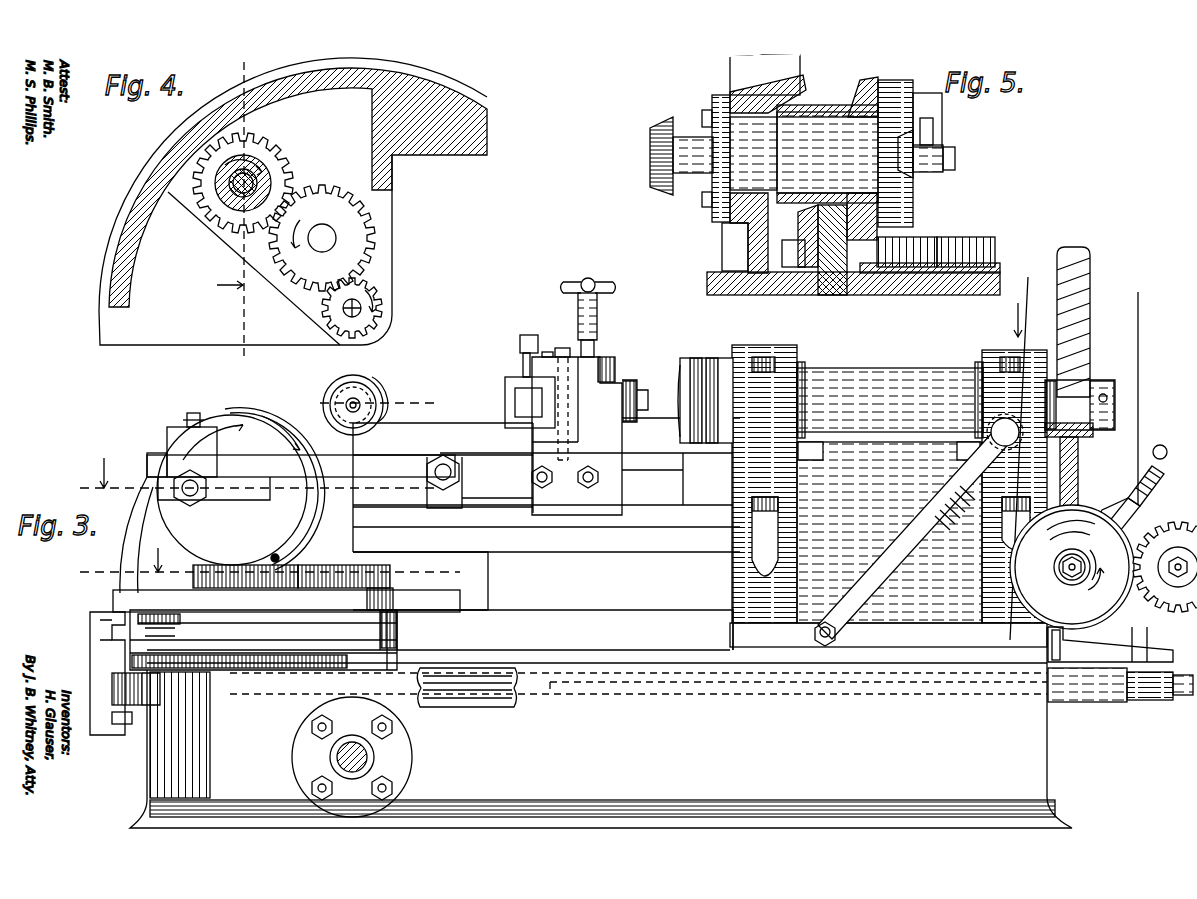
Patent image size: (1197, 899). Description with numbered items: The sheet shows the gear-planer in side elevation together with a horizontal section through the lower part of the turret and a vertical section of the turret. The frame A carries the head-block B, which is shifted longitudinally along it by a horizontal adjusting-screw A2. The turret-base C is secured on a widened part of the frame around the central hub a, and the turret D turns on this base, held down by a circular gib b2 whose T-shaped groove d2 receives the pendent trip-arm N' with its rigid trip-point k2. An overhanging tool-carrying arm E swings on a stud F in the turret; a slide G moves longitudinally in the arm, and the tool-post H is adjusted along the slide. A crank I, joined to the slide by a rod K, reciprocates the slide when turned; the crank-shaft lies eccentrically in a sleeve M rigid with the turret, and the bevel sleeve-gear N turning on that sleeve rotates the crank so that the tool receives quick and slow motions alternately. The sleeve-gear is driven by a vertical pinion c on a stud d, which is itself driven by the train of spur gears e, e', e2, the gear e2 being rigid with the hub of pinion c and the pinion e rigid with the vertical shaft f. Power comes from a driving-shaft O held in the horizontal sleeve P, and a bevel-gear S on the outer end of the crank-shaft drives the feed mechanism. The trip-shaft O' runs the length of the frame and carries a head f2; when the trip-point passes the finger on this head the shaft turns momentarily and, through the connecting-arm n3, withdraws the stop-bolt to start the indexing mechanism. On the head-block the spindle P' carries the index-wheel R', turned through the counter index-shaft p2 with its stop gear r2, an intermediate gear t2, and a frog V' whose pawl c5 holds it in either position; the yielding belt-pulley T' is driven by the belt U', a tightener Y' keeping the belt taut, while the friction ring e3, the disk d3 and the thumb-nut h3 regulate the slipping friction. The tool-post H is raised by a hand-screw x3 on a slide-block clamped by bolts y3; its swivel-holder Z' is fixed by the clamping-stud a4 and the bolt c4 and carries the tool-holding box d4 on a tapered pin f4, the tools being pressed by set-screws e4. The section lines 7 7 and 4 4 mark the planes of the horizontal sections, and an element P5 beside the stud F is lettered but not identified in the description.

In FIG. 3, the frame A is at (601, 727).
In FIG. 3, the horizontal adjusting-screw A2 is at (1155, 690).
In FIG. 3, the head-block B is at (888, 496).
In FIG. 3, the turret-base C is at (297, 640).
In FIG. 3, the tool-carrying arm E is at (625, 540).
In FIG. 3, the slide G is at (660, 462).
In FIG. 3, the tool-post H is at (570, 413).
In FIG. 3, the swivel-holder Z' is at (618, 422).
In FIG. 5, the crank I is at (897, 92).
In FIG. 3, the crank I is at (232, 490).
In FIG. 4, the turret D is at (293, 209).
In FIG. 5, the turret D is at (728, 245).
In FIG. 3, the turret D is at (228, 500).
In FIG. 5, the bevel sleeve-gear N is at (827, 135).
In FIG. 3, the bevel sleeve-gear N is at (241, 420).
In FIG. 3, the horizontal stud F is at (357, 403).
In FIG. 3, the pulley pin P5 is at (357, 410).
In FIG. 5, the rod K is at (935, 130).
In FIG. 3, the rod K is at (443, 464).
In FIG. 4, the vertical pinion c is at (230, 196).
In FIG. 5, the vertical pinion c is at (803, 218).
In FIG. 3, the vertical pinion c is at (280, 557).
In FIG. 4, the stud d is at (208, 183).
In FIG. 4, the spur-pinion e is at (354, 303).
In FIG. 5, the spur-pinion e is at (968, 236).
In FIG. 3, the spur-pinion e is at (388, 582).
In FIG. 4, the spur driving-gear e' is at (322, 238).
In FIG. 5, the spur driving-gear e' is at (930, 239).
In FIG. 3, the spur driving-gear e' is at (344, 588).
In FIG. 4, the spur driving-gear e2 is at (265, 153).
In FIG. 5, the spur driving-gear e2 is at (787, 270).
In FIG. 3, the spur driving-gear e2 is at (208, 590).
In FIG. 3, the friction ring e3 is at (1085, 516).
In FIG. 3, the set-screws e4 is at (520, 342).
In FIG. 4, the vertical shaft f is at (343, 308).
In FIG. 3, the head f2 is at (112, 683).
In FIG. 3, the tapered pin f4 is at (546, 352).
In FIG. 3, the bolt c4 is at (563, 348).
In FIG. 3, the spring-actuated pawl c5 is at (1160, 445).
In FIG. 3, the T-shaped groove d2 is at (125, 622).
In FIG. 3, the opposing disk d3 is at (1084, 563).
In FIG. 3, the tool-holding box d4 is at (507, 390).
In FIG. 3, the circular gib b2 is at (165, 634).
In FIG. 3, the trip-point k2 is at (125, 725).
In FIG. 3, the trip-arm N' is at (118, 705).
In FIG. 3, the horizontal sleeve P is at (339, 757).
In FIG. 3, the driving-shaft O is at (368, 757).
In FIG. 3, the trip-shaft O' is at (467, 700).
In FIG. 3, the horizontal spindle P' is at (830, 400).
In FIG. 3, the tightener Y' is at (919, 530).
In FIG. 3, the index-wheel R' is at (1083, 377).
In FIG. 3, the driving-belt U' is at (1096, 458).
In FIG. 3, the frog V' is at (1143, 507).
In FIG. 3, the belt-pulley T' is at (1072, 567).
In FIG. 3, the intermediate gear t2 is at (1066, 576).
In FIG. 3, the thumb-nut h3 is at (1073, 580).
In FIG. 3, the counter index-shaft p2 is at (1178, 563).
In FIG. 3, the gear r2 is at (1178, 584).
In FIG. 3, the connecting-arm n3 is at (1140, 638).
In FIG. 3, the hand-screw x3 is at (597, 312).
In FIG. 3, the clamping-stud a4 is at (615, 368).
In FIG. 3, the clamping-bolts y3 is at (553, 483).
In FIG. 3, the section line 7 7 is at (260, 441).
In FIG. 3, the section line 4 4 is at (292, 570).
In FIG. 5, the bevel-gear S is at (660, 128).
In FIG. 5, the sleeve M is at (804, 152).
In FIG. 5, the central hub a is at (832, 285).